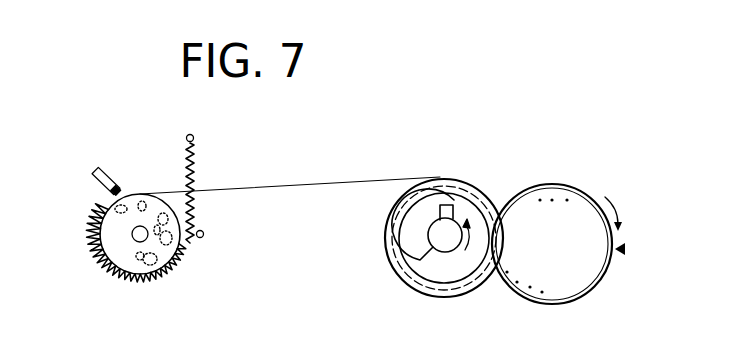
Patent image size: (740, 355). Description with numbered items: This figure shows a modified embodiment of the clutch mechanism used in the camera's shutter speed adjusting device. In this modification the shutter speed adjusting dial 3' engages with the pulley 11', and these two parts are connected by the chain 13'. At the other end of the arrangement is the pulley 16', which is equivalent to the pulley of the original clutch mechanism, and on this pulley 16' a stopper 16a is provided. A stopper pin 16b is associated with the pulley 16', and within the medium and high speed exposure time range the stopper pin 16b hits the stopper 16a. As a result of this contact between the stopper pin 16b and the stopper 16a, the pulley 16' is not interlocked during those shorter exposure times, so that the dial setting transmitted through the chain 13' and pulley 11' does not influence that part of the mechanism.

The pulley 16' is at (121, 249).
The stopper 16a is at (100, 172).
The stopper pin 16b is at (204, 233).
The chain 13' is at (290, 157).
The pulley 11' is at (458, 208).
The shutter speed adjusting dial 3' is at (558, 222).